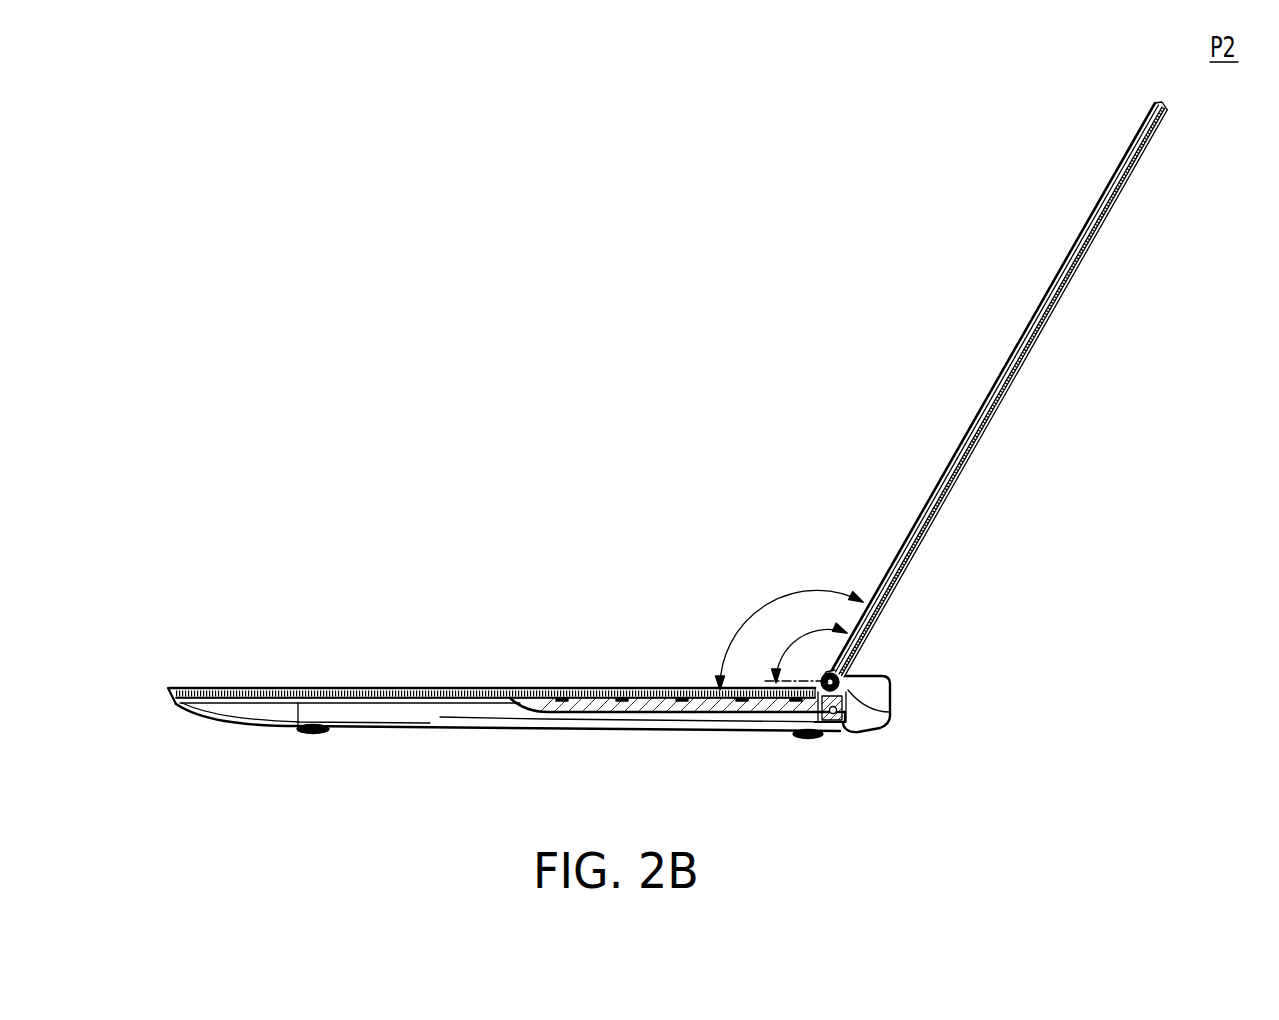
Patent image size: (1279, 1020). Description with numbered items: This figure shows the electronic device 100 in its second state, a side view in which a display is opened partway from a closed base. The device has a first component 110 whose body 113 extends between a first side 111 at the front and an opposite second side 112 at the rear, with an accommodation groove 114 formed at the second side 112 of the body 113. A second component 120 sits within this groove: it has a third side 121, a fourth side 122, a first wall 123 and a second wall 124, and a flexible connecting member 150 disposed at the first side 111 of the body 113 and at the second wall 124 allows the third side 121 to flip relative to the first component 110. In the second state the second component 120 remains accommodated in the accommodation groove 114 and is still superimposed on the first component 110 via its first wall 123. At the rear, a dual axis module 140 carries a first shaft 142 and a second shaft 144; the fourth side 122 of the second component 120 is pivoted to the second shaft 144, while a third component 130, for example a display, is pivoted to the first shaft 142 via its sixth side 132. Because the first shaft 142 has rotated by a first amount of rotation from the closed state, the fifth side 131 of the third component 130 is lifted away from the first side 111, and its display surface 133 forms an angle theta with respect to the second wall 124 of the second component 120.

The electronic device 100 is at (186, 276).
The first component 110 is at (456, 770).
The first side 111 is at (181, 728).
The second side 112 is at (839, 755).
The body 113 is at (403, 718).
The accommodation groove 114 is at (666, 692).
The second component 120 is at (640, 726).
The third side 121 is at (545, 722).
The fourth side 122 is at (783, 728).
The first wall 123 is at (612, 716).
The second wall 124 is at (595, 686).
The third component 130 is at (1055, 426).
The fifth side 131 is at (1128, 84).
The sixth side 132 is at (878, 661).
The surface 133 is at (1066, 236).
The dual axis module 140 is at (975, 705).
The first shaft 142 is at (848, 704).
The second shaft 144 is at (862, 738).
The flexible connecting member 150 is at (473, 695).